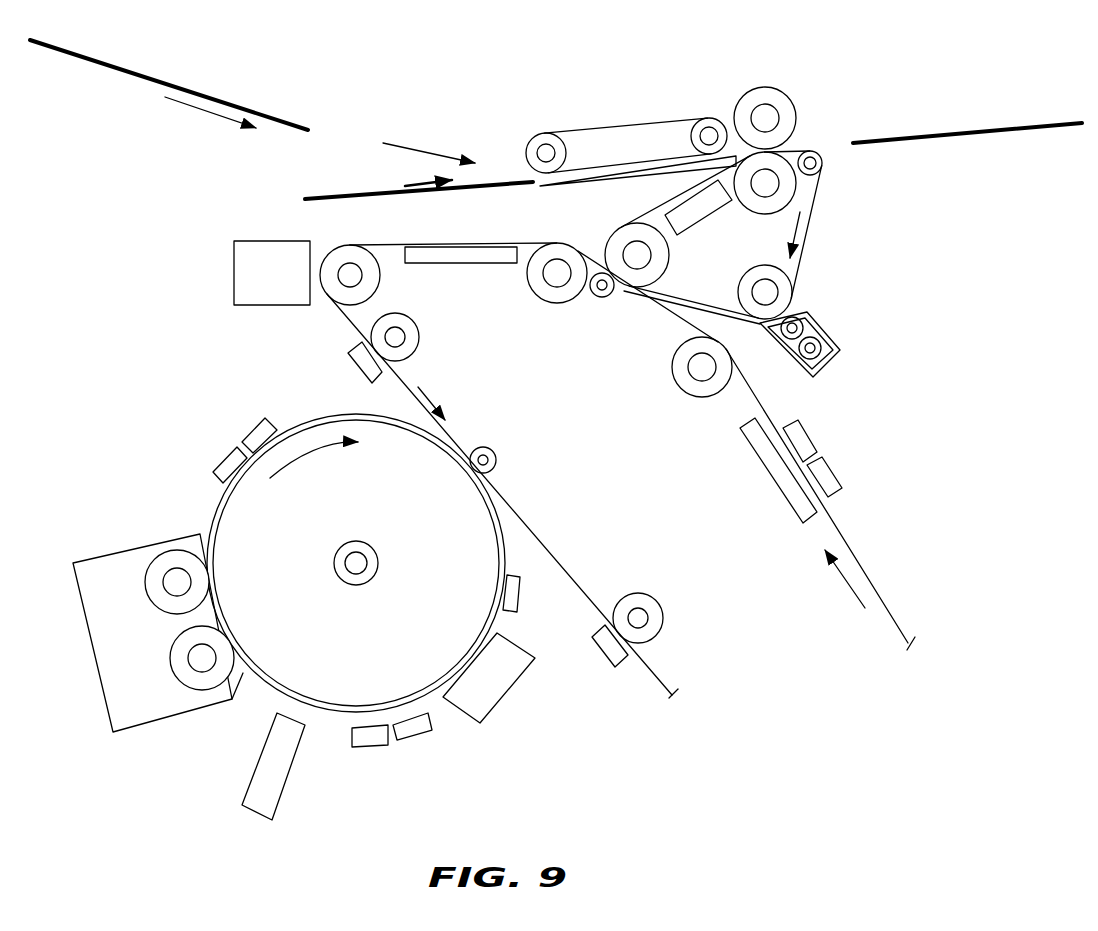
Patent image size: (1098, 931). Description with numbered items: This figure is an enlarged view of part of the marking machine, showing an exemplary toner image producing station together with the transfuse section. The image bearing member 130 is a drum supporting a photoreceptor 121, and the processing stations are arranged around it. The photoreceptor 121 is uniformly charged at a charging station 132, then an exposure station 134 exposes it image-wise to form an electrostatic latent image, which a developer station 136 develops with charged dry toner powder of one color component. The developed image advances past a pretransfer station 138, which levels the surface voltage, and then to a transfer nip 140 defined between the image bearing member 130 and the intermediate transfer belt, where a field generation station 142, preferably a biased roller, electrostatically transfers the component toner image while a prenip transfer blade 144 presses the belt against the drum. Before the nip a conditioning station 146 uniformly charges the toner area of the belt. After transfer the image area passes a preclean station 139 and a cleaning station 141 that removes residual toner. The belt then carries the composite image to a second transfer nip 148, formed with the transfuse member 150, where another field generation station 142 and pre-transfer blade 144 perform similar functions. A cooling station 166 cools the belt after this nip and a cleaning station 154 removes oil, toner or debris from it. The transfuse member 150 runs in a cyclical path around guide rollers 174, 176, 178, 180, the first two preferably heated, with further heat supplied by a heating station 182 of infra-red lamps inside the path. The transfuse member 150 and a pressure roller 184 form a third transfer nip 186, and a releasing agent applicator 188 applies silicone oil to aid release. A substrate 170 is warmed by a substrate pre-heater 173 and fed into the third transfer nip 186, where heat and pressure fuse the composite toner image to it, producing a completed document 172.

The photoreceptor 121 is at (268, 687).
The image bearing member 130 is at (512, 537).
The charging station 132 is at (397, 748).
The exposure station 134 is at (288, 768).
The developer station 136 is at (127, 557).
The pretransfer station 138 is at (232, 440).
The preclean station 139 is at (513, 600).
The transfer nip 140 is at (497, 478).
The cleaning station 141 is at (495, 695).
The field generation station 142 is at (600, 297).
The prenip transfer blade 144 is at (624, 291).
The conditioning station 146 is at (362, 367).
The second transfer nip 148 is at (598, 262).
The transfuse member 150 is at (815, 215).
The cleaning station 154 is at (265, 235).
The cooling station 166 is at (452, 258).
The substrate 170 is at (275, 125).
The completed document 172 is at (1038, 123).
The substrate pre-heater 173 is at (580, 118).
The guide roller 174 is at (620, 238).
The guide roller 176 is at (752, 204).
The guide roller 178 is at (820, 172).
The guide roller 180 is at (746, 283).
The heating station 182 is at (712, 197).
The pressure roller 184 is at (760, 95).
The third transfer nip 186 is at (802, 138).
The releasing agent applicator 188 is at (836, 353).